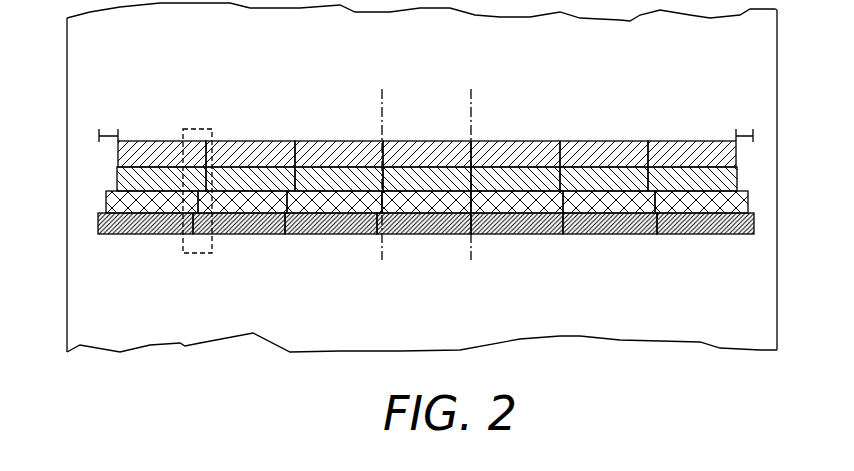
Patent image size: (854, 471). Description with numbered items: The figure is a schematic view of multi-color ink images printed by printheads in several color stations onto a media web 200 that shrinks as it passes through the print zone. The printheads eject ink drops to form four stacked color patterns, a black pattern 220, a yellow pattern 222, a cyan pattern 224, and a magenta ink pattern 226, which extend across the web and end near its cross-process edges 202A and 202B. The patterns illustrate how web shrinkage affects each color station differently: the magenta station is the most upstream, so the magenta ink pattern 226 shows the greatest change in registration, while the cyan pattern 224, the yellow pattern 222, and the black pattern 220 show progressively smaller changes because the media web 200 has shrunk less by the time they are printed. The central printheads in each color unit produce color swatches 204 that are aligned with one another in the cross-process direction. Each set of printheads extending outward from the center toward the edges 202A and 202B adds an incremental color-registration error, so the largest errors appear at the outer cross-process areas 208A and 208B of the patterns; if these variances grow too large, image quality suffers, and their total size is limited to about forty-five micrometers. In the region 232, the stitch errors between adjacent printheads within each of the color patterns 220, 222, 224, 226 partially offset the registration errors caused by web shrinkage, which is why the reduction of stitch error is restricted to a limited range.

The media web 200 is at (537, 339).
The cross-process edge of the media web 202A is at (67, 77).
The cross-process edge of the media web 202B is at (777, 318).
The color swatches 204 is at (429, 111).
The outer cross-process area (variance) 208A is at (110, 135).
The outer cross-process area (variance) 208B is at (745, 132).
The black pattern 220 is at (98, 235).
The yellow pattern 222 is at (105, 202).
The cyan pattern 224 is at (117, 178).
The magenta ink pattern 226 is at (118, 154).
The region 232 is at (198, 253).